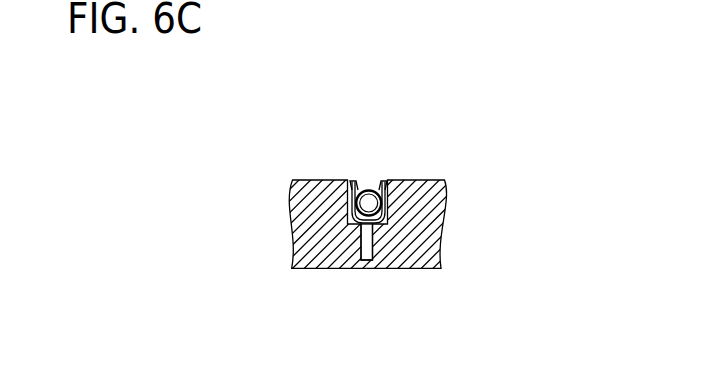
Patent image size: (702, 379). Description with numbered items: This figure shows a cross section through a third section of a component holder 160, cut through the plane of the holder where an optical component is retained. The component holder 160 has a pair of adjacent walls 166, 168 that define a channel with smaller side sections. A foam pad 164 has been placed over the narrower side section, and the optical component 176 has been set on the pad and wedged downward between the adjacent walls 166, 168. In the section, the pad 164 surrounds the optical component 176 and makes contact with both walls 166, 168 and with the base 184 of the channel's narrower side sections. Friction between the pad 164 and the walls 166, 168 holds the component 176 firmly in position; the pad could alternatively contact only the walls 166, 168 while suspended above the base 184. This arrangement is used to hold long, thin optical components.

The component holder 160 is at (445, 142).
The foam pad 164 is at (379, 183).
The adjacent wall 166 is at (388, 224).
The adjacent wall 168 is at (350, 226).
The optical component 176 is at (372, 210).
The base 184 is at (378, 224).